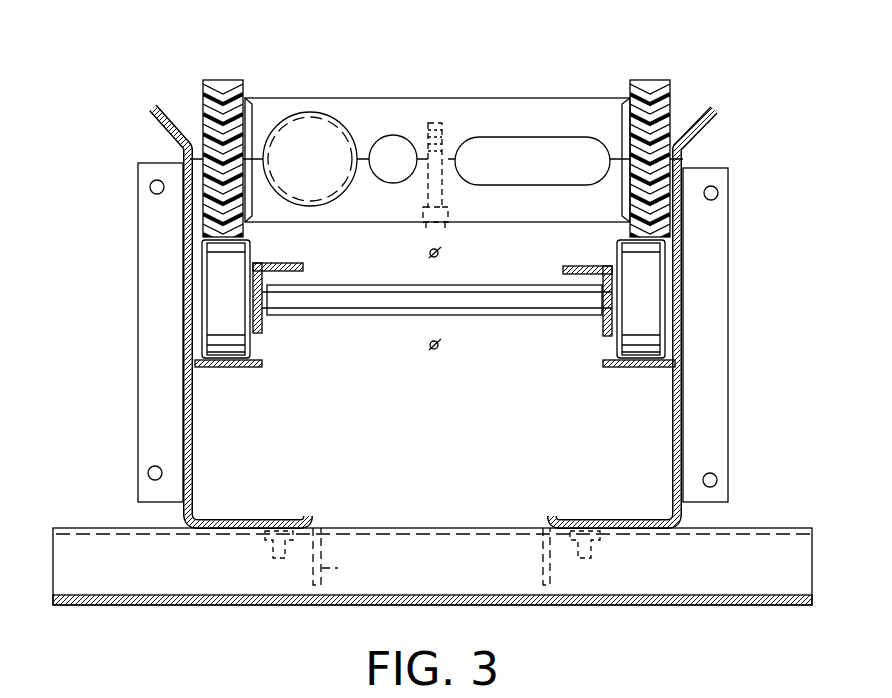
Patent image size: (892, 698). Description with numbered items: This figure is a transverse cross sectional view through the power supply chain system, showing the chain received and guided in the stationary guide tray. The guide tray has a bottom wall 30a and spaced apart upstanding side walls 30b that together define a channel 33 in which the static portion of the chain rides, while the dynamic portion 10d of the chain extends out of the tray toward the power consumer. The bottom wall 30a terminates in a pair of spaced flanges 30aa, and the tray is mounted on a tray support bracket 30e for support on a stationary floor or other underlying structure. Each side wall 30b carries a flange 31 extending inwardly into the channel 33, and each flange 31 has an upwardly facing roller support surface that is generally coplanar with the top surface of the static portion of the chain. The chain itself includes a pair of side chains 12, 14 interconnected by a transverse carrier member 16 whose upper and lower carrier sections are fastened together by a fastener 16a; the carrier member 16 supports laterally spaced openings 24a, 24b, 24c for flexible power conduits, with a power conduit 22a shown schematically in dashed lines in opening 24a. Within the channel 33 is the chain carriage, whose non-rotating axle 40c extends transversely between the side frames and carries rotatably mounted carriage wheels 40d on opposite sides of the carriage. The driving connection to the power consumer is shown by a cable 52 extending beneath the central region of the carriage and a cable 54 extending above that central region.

The dynamic portion 10d is at (598, 90).
The side chain 12 is at (205, 100).
The side chain 14 is at (668, 104).
The transverse carrier member 16 is at (436, 116).
The fastener 16a is at (425, 236).
The power conduit 22a is at (292, 140).
The opening 24a is at (309, 111).
The opening 24b is at (393, 134).
The opening 24c is at (557, 136).
The bottom wall 30a is at (276, 523).
The flange 30aa is at (315, 585).
The side wall 30b is at (183, 212).
The tray support bracket 30e is at (107, 577).
The flange 31 is at (230, 368).
The channel 33 is at (396, 421).
The axle 40c is at (303, 298).
The carriage wheel 40d is at (215, 297).
The cable 52 is at (440, 344).
The cable 54 is at (440, 252).